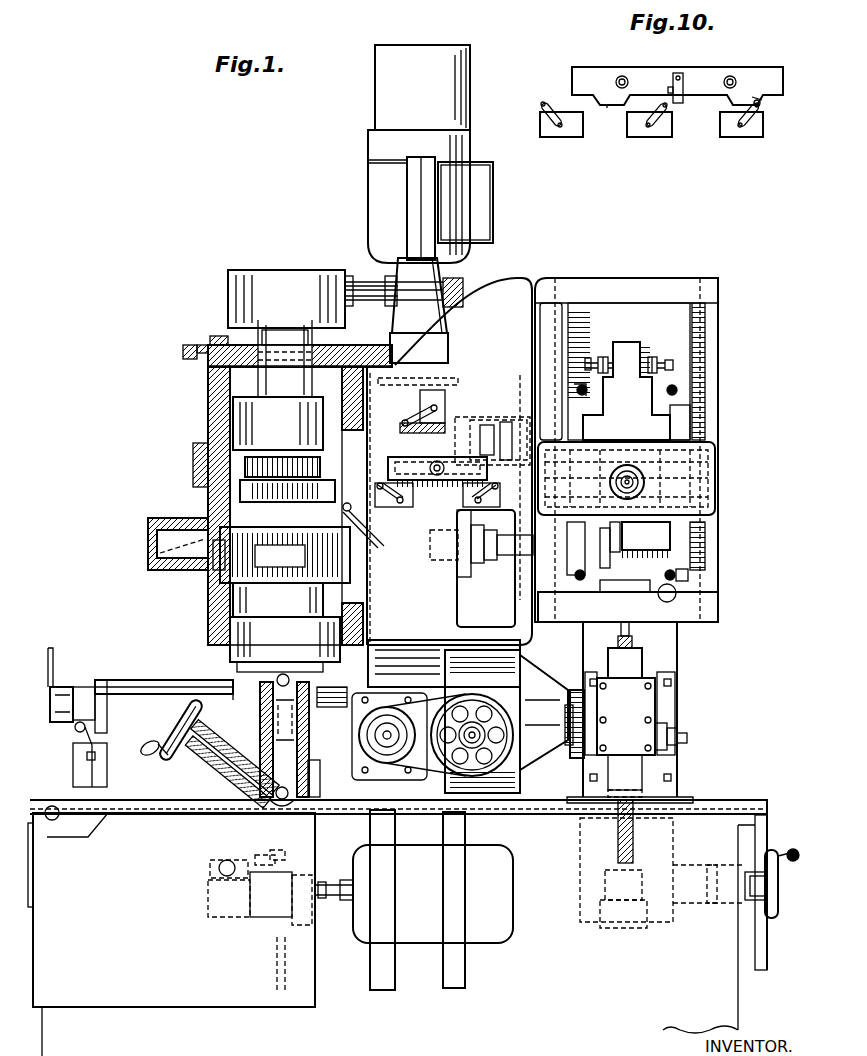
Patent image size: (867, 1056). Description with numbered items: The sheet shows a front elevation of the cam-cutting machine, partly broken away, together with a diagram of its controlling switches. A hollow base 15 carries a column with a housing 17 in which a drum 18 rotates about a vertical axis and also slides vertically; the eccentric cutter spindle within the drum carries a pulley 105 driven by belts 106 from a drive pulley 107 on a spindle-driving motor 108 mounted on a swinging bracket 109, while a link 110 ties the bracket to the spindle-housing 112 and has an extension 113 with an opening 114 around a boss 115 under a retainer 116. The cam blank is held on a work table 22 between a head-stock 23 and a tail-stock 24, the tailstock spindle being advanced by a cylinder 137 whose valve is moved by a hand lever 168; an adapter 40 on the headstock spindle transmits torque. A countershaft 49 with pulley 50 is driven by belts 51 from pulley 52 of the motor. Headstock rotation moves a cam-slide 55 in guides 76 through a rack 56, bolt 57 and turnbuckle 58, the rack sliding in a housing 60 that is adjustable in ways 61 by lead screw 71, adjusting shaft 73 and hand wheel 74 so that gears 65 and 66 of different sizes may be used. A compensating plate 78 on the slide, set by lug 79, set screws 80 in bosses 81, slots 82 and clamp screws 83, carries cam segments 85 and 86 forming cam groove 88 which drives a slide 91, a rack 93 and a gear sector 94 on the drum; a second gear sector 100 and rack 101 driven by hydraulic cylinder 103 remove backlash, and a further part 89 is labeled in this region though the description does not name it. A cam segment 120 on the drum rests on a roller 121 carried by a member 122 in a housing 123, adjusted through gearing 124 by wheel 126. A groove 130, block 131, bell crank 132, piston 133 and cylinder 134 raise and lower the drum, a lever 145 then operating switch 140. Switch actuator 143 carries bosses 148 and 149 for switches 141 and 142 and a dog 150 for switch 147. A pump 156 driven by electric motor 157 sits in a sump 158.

In FIG. 1, the spindle-driving motor 108 is at (376, 186).
In FIG. 1, the bracket 109 is at (480, 221).
In FIG. 1, the drive pulley 107 is at (465, 280).
In FIG. 1, the belt 106 is at (354, 279).
In FIG. 1, the pulley 105 is at (232, 272).
In FIG. 1, the link 110 is at (358, 352).
In FIG. 1, the spindle-housing 112 is at (258, 338).
In FIG. 1, the extension 113 is at (185, 348).
In FIG. 1, the opening 114 is at (200, 345).
In FIG. 1, the boss 115 is at (208, 366).
In FIG. 1, the retainer 116 is at (213, 336).
In FIG. 1, the housing 17 is at (208, 385).
In FIG. 1, the drum 18 is at (248, 408).
In FIG. 1, the rack 93 is at (237, 464).
In FIG. 1, the gear sector 94 is at (265, 483).
In FIG. 1, the second gear sector 100 is at (245, 570).
In FIG. 1, the rack 101 is at (235, 548).
In FIG. 1, the annular groove 130 is at (178, 535).
In FIG. 1, the block 131 is at (157, 570).
In FIG. 1, the bell crank 132 is at (378, 548).
In FIG. 1, the adapter 40 is at (325, 688).
In FIG. 1, the switch 140 is at (423, 398).
In FIG. 1, the pivoted lever 145 is at (420, 418).
In FIG. 1, the piston 133 is at (485, 418).
In FIG. 1, the cylinder 134 is at (503, 420).
In FIG. 1, the switch actuator 143 is at (425, 472).
In FIG. 10, the switch actuator 143 is at (782, 67).
In FIG. 1, the switch 141 is at (403, 507).
In FIG. 10, the switch 141 is at (573, 134).
In FIG. 1, the switch 142 is at (492, 505).
In FIG. 10, the switch 142 is at (748, 134).
In FIG. 1, the hydraulic cylinder 103 is at (507, 558).
In FIG. 1, the column 89 is at (570, 580).
In FIG. 1, the cam-slide 55 is at (680, 338).
In FIG. 1, the guides 76 is at (708, 351).
In FIG. 1, the lug 79 is at (625, 345).
In FIG. 1, the set screws 80 is at (673, 367).
In FIG. 1, the bosses 81 is at (653, 357).
In FIG. 1, the arcuate slots 82 is at (678, 572).
In FIG. 1, the clamp screws 83 is at (680, 580).
In FIG. 1, the compensating plate 78 is at (680, 406).
In FIG. 1, the cam groove 88 is at (683, 433).
In FIG. 1, the cam segment 85 is at (626, 432).
In FIG. 1, the cam segment 86 is at (635, 545).
In FIG. 1, the slide 91 is at (720, 524).
In FIG. 1, the turnbuckle 58 is at (650, 622).
In FIG. 1, the bolt 57 is at (632, 639).
In FIG. 1, the rack 56 is at (637, 778).
In FIG. 1, the gear 66 is at (577, 690).
In FIG. 1, the gear 65 is at (573, 760).
In FIG. 1, the housing 60 is at (626, 716).
In FIG. 1, the ways 61 is at (597, 799).
In FIG. 1, the head-stock 23 is at (404, 678).
In FIG. 1, the work table 22 is at (528, 790).
In FIG. 1, the pulley 52 is at (388, 756).
In FIG. 1, the pulley 50 is at (493, 690).
In FIG. 1, the countershaft 49 is at (473, 746).
In FIG. 1, the belt 51 is at (455, 772).
In FIG. 1, the hollow base 15 is at (729, 804).
In FIG. 1, the tail-stock 24 is at (118, 681).
In FIG. 1, the cylinder 137 is at (84, 688).
In FIG. 1, the hand lever 168 is at (78, 731).
In FIG. 1, the adjusting wheel 126 is at (173, 735).
In FIG. 1, the roller 121 is at (232, 738).
In FIG. 1, the member 122 is at (345, 732).
In FIG. 1, the cam segment 120 is at (262, 746).
In FIG. 1, the housing 123 is at (312, 770).
In FIG. 1, the gearing 124 is at (282, 806).
In FIG. 1, the sump 158 is at (213, 1000).
In FIG. 1, the pump 156 is at (273, 903).
In FIG. 1, the electric motor 157 is at (478, 925).
In FIG. 1, the lead screw 71 is at (605, 850).
In FIG. 1, the adjusting shaft 73 is at (728, 896).
In FIG. 1, the hand wheel 74 is at (770, 850).
In FIG. 10, the dog 150 is at (683, 86).
In FIG. 10, the switch 147 is at (663, 133).
In FIG. 10, the boss 148 is at (607, 107).
In FIG. 10, the boss 149 is at (765, 101).